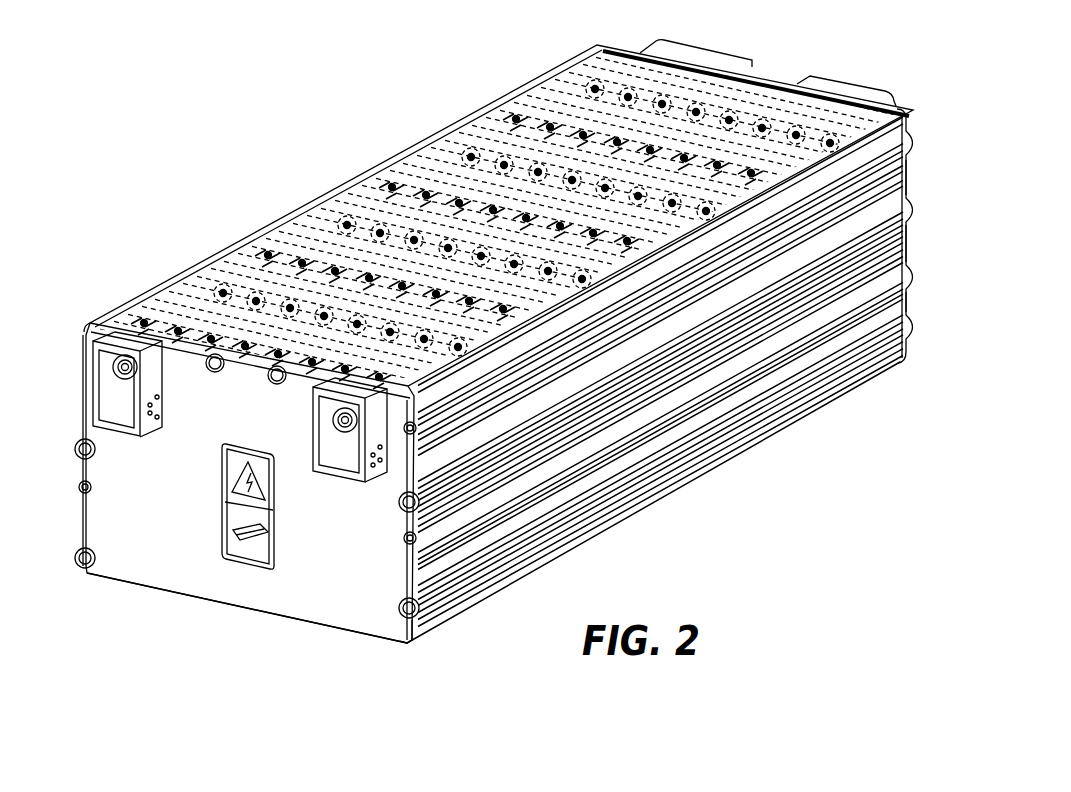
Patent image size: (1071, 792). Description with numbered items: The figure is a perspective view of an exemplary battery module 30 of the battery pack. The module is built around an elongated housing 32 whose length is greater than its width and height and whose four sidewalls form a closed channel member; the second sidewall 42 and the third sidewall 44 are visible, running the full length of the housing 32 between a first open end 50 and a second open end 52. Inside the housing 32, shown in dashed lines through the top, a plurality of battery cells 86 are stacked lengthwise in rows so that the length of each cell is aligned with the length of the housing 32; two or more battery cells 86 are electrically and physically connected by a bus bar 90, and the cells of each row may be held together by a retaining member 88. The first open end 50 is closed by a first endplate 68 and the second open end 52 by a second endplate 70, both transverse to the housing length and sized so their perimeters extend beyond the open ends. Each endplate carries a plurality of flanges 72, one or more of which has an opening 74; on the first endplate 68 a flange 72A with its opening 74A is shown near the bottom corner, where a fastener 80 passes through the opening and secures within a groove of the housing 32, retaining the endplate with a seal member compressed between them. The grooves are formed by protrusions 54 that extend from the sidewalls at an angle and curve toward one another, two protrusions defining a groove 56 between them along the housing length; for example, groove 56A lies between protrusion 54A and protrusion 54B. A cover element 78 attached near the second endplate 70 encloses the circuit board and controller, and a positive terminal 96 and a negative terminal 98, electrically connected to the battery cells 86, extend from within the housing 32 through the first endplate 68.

The battery module 30 is at (180, 68).
The housing 32 is at (122, 314).
The second sidewall 42 is at (670, 444).
The third sidewall 44 is at (893, 111).
The first open end 50 is at (102, 300).
The second open end 52 is at (606, 42).
The protrusion 54 is at (896, 281).
The protrusion 54A is at (433, 610).
The protrusion 54B is at (500, 553).
The groove 56 is at (872, 246).
The groove 56A is at (452, 592).
The first endplate 68 is at (185, 580).
The second endplate 70 is at (912, 188).
The flange 72 is at (74, 449).
The flange 72A is at (404, 522).
The opening 74 is at (82, 492).
The opening 74A is at (407, 546).
The cover element 78 is at (857, 92).
The fastener 80 is at (400, 630).
The battery cell 86 is at (305, 246).
The retaining member 88 is at (375, 218).
The bus bar 90 is at (302, 258).
The positive terminal 96 is at (340, 423).
The negative terminal 98 is at (115, 372).